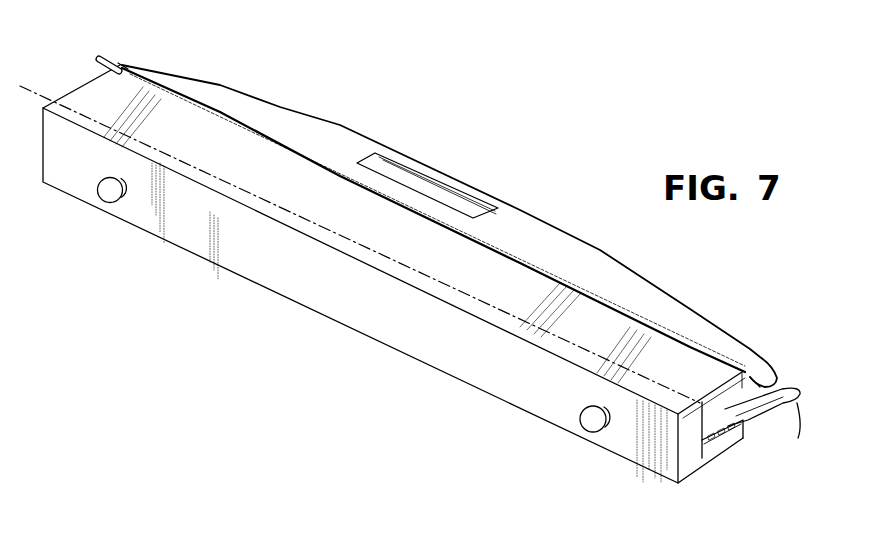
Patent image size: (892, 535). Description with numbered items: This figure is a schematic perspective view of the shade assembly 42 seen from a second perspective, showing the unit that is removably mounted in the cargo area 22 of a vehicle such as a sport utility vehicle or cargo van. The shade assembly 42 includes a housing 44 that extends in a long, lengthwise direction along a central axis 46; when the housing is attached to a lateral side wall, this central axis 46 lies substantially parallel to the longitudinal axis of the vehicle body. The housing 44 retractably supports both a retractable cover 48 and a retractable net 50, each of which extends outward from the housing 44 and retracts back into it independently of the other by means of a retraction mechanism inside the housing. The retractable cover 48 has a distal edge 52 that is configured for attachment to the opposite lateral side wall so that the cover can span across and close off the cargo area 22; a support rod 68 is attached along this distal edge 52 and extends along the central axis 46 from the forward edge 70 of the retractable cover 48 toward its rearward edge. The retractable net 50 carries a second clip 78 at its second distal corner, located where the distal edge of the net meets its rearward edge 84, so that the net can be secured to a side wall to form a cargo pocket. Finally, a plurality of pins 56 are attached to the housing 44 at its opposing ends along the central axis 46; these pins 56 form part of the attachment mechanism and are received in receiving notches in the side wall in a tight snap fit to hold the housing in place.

The cargo area 22 is at (775, 384).
The shade assembly 42 is at (394, 265).
The housing 44 is at (334, 289).
The central axis 46 is at (35, 94).
The retractable cover 48 is at (449, 217).
The retractable net 50 is at (743, 403).
The distal edge 52 is at (535, 218).
The pins 56 is at (110, 193).
The support rod 68 is at (108, 58).
The forward edge 70 is at (122, 68).
The second clip 78 is at (762, 422).
The rearward edge 84 is at (740, 423).